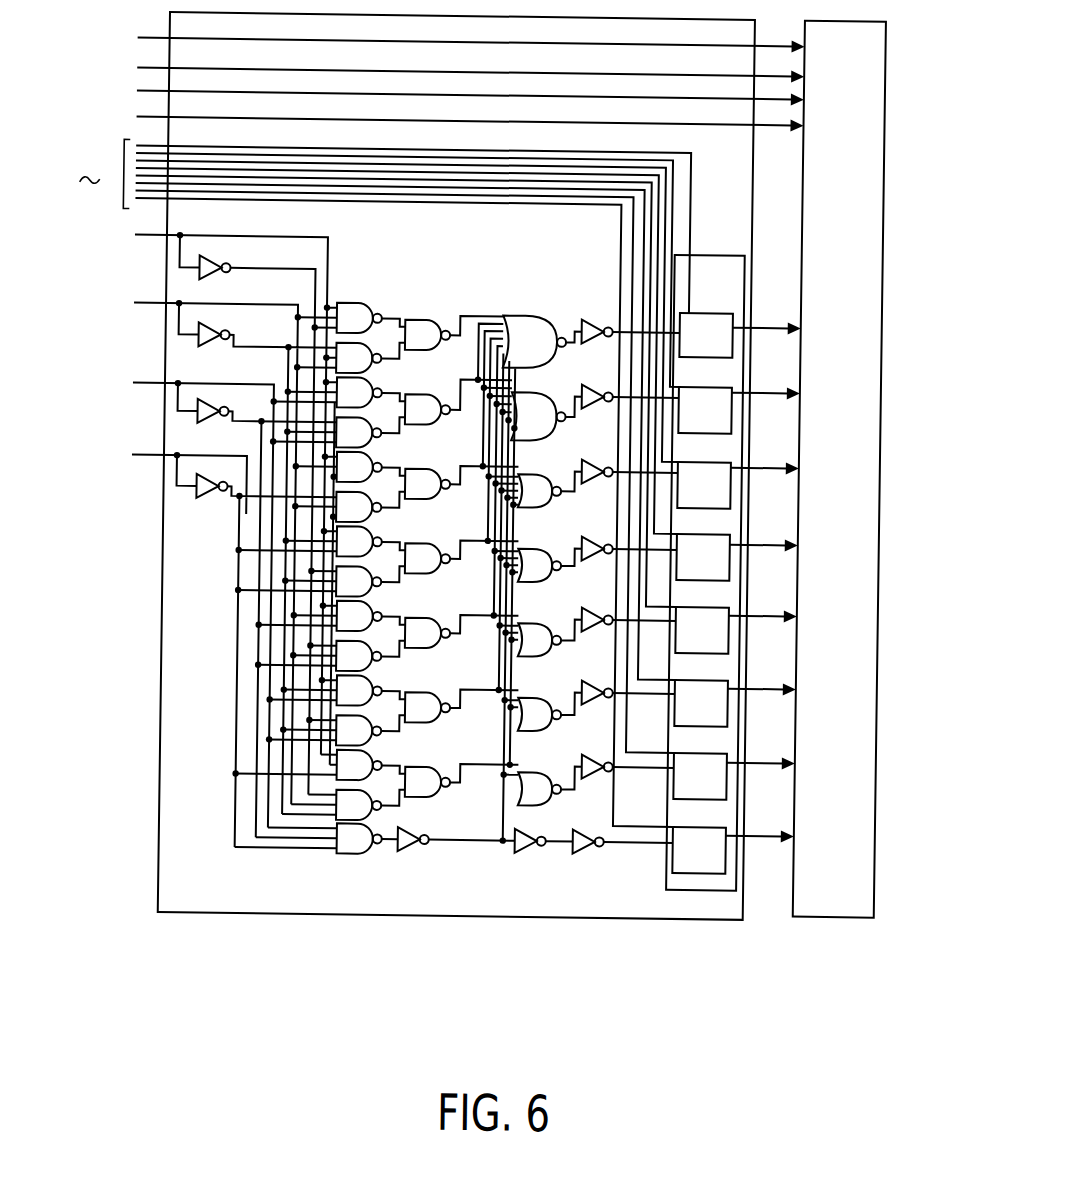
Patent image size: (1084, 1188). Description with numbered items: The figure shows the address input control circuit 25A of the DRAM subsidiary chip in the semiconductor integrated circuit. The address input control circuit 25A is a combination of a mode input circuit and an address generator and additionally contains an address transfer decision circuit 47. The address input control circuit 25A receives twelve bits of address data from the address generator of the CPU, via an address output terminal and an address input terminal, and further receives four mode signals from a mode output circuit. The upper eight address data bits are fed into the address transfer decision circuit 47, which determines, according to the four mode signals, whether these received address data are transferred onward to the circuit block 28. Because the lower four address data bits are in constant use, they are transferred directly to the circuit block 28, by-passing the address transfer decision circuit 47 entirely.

The address input control circuit 25A is at (295, 912).
The address transfer decision circuit 47 is at (705, 248).
The circuit block 28 is at (854, 907).